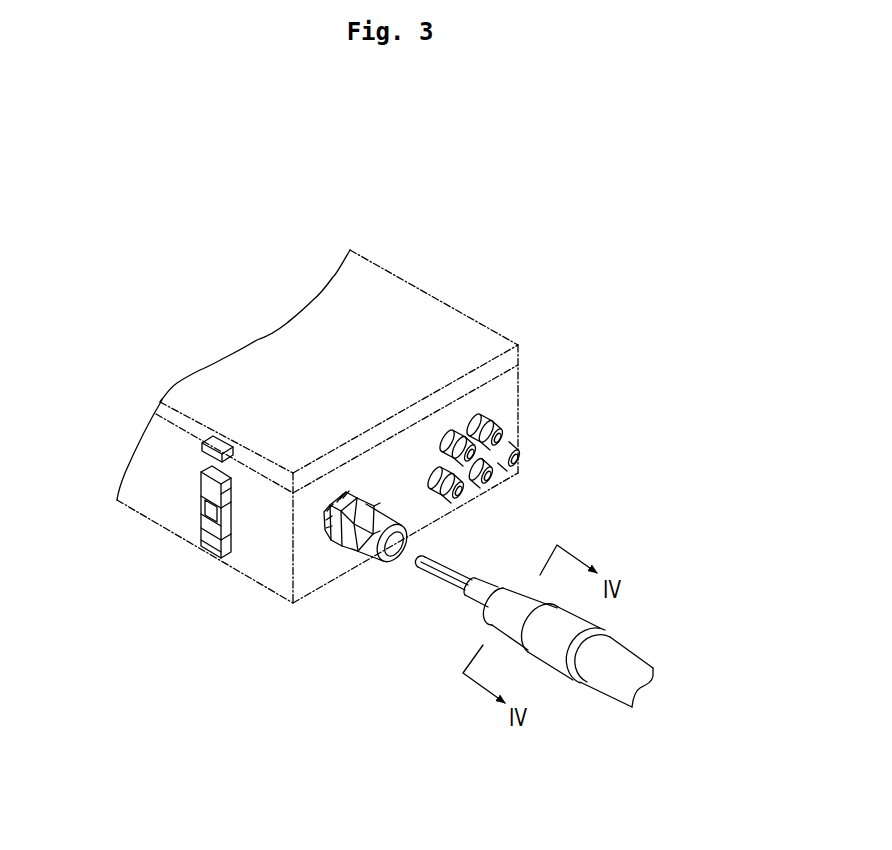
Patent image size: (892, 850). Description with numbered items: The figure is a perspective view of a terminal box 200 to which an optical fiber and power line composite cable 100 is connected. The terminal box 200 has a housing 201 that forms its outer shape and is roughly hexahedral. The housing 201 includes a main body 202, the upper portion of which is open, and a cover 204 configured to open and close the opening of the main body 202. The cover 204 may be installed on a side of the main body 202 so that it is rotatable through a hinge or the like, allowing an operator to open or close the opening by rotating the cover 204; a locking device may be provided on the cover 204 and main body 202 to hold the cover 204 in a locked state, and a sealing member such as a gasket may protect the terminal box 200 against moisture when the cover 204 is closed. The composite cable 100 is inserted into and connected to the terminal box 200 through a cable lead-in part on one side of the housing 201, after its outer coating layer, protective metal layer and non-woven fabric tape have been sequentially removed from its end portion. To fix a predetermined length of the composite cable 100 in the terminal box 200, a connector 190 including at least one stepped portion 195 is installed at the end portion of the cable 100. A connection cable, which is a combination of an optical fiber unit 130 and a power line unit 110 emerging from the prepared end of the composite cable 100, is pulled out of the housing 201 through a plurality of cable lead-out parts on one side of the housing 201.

The optical fiber and power line composite cable 100 is at (613, 680).
The power line unit 110 is at (435, 575).
The optical fiber unit 130 is at (463, 578).
The connector 190 is at (560, 665).
The stepped portion 195 is at (500, 615).
The terminal box 200 is at (396, 219).
The housing 201 is at (497, 193).
The main body 202 is at (498, 400).
The cover 204 is at (368, 292).